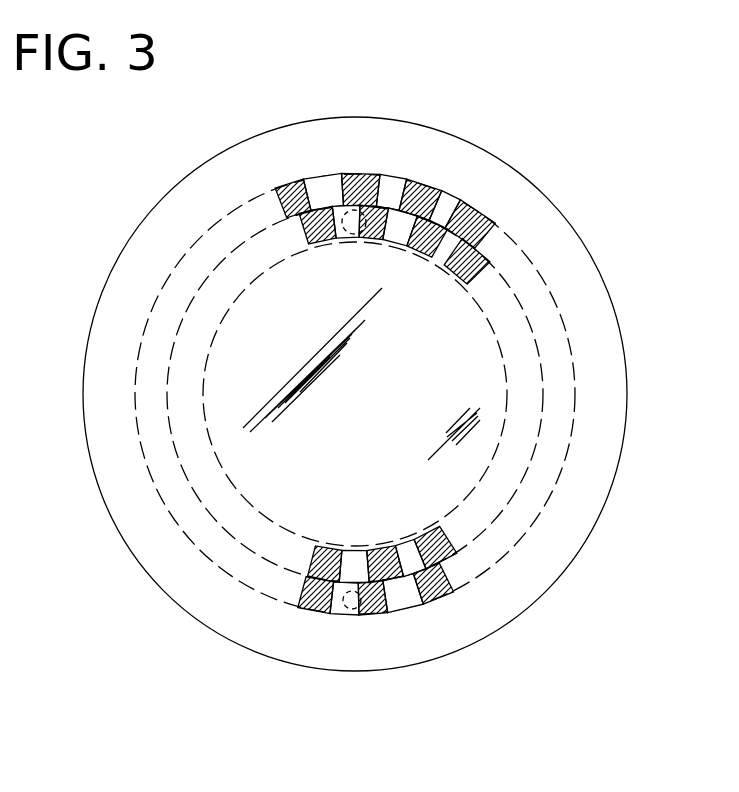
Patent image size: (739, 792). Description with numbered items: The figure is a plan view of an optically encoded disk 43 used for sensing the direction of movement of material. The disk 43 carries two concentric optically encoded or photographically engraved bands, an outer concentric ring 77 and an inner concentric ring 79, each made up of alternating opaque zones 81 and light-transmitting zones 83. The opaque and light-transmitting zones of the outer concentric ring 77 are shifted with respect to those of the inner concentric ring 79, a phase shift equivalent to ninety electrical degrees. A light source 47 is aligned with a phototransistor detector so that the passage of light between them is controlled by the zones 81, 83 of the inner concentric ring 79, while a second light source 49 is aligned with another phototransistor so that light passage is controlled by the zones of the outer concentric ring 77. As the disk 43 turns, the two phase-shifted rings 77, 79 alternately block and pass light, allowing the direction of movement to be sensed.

The disk 43 is at (497, 162).
The light source 47 is at (350, 234).
The light source 49 is at (348, 609).
The outer concentric ring 77 is at (235, 209).
The inner concentric ring 79 is at (257, 281).
The opaque zones 81 is at (301, 188).
The light-transmitting zones 83 is at (332, 179).